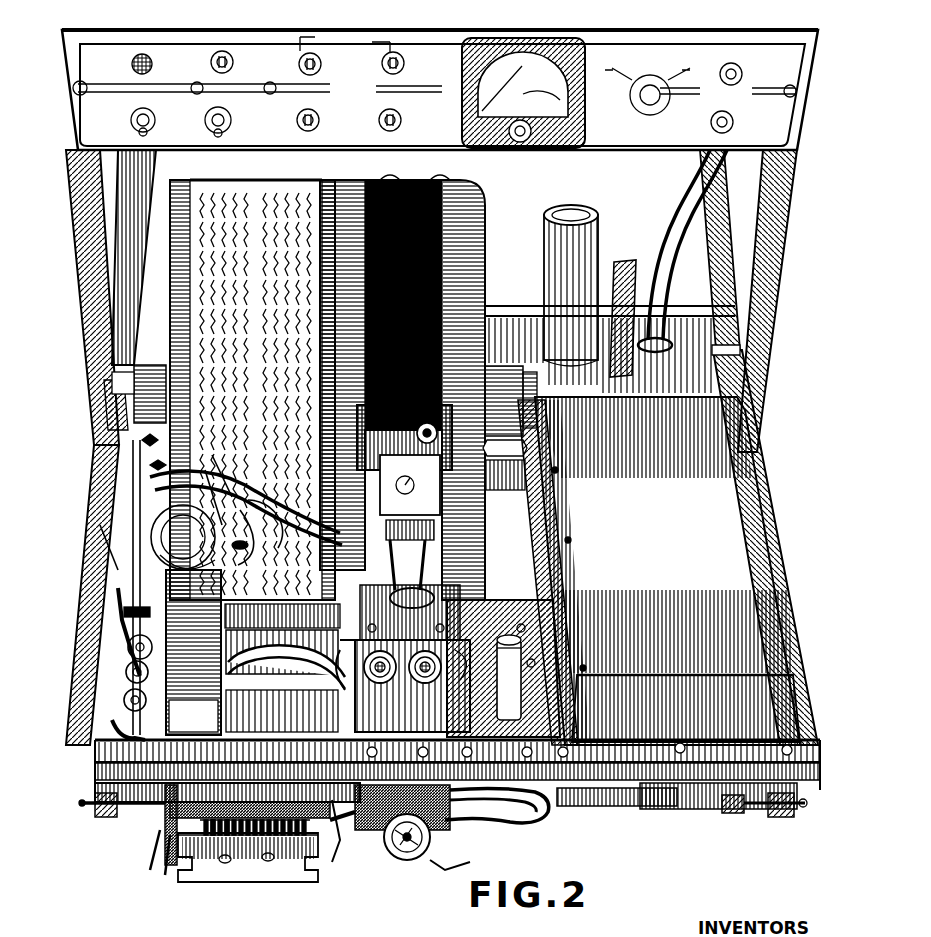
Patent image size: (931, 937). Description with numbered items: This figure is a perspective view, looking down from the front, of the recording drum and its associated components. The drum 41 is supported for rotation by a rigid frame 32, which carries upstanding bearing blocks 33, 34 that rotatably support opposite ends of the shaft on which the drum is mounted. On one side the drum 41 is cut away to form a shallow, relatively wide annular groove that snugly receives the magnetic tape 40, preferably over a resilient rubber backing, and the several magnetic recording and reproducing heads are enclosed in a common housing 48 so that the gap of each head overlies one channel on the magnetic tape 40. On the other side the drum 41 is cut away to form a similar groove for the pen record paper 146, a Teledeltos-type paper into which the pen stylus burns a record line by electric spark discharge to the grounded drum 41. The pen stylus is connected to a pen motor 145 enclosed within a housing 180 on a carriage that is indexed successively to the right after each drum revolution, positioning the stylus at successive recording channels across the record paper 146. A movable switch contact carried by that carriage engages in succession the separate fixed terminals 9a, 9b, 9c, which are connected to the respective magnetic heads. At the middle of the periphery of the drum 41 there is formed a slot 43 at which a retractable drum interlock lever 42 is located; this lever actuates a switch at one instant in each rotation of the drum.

The pen record paper 146 is at (262, 192).
The magnetic tape 40 is at (402, 355).
The drum 41 is at (437, 215).
The slot 43 is at (356, 425).
The bearing block 34 is at (150, 390).
The drum interlock lever 42 is at (92, 452).
The housing 48 is at (366, 405).
The bearing block 33 is at (500, 446).
The pen motor 145 is at (118, 562).
The frame 32 is at (97, 706).
The housing 180 is at (193, 652).
The fixed terminal 9a is at (203, 837).
The fixed terminal 9b is at (214, 837).
The fixed terminal 9c is at (225, 837).